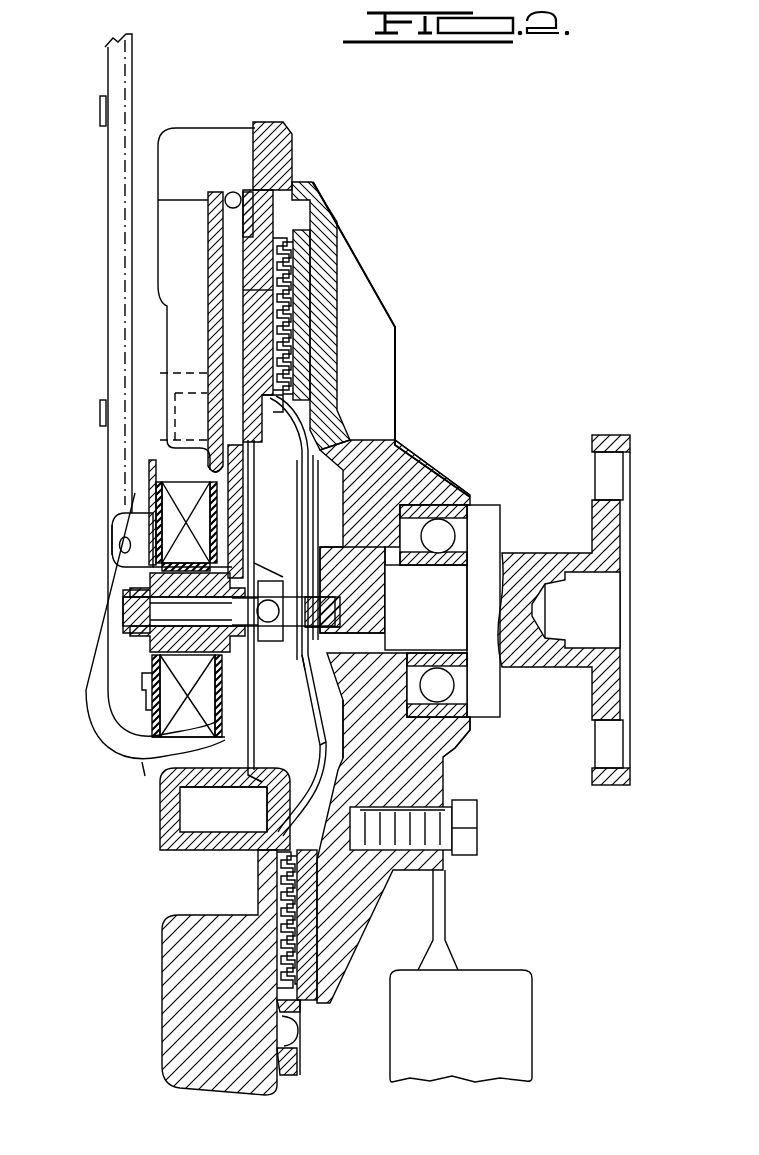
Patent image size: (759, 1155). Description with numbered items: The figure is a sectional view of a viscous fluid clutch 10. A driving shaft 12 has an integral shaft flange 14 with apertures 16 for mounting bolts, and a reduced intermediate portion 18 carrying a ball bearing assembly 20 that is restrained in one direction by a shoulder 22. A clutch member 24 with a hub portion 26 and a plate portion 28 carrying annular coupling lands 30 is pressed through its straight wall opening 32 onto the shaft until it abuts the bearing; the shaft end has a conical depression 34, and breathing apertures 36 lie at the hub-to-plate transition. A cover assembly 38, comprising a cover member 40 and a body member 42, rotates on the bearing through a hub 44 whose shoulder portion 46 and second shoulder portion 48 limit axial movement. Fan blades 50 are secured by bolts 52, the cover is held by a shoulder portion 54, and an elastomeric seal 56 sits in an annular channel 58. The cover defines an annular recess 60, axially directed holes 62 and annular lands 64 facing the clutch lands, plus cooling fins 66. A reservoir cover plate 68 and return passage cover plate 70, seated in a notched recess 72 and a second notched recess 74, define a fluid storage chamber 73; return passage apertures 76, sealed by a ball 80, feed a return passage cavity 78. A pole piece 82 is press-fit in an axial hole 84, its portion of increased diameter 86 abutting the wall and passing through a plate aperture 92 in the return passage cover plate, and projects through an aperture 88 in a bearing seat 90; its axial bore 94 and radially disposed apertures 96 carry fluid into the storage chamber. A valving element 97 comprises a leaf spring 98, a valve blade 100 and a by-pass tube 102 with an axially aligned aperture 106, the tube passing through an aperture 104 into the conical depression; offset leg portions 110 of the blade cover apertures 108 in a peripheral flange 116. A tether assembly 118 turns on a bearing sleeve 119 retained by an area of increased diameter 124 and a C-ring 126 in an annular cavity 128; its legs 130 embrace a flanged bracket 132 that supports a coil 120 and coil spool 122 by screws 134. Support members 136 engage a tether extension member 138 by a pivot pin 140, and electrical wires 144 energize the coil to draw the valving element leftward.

The viscous fluid clutch 10 is at (493, 268).
The driving shaft 12 is at (612, 548).
The shaft flange 14 is at (606, 437).
The apertures 16 is at (610, 496).
The reduced intermediate portion 18 is at (428, 600).
The ball bearing assembly 20 is at (466, 527).
The shoulder 22 is at (475, 675).
The clutch member 24 is at (300, 275).
The hub portion 26 is at (358, 660).
The plate portion 28 is at (290, 300).
The annular coupling lands 30 is at (292, 322).
The straight wall opening 32 is at (395, 536).
The conical depression 34 is at (350, 606).
The breathing apertures 36 is at (325, 750).
The cover assembly 38 is at (283, 124).
The cover member 40 is at (200, 126).
The body member 42 is at (378, 287).
The hub 44 is at (440, 486).
The shoulder portion 46 is at (470, 705).
The second shoulder portion 48 is at (425, 712).
The fan blades 50 is at (438, 1016).
The bolts 52 is at (466, 825).
The shoulder portion 54 is at (298, 1066).
The elastomeric seal 56 is at (302, 1013).
The annular channel 58 is at (300, 1040).
The annular recess 60 is at (305, 205).
The axially directed holes 62 is at (246, 225).
The annular lands 64 is at (270, 300).
The cooling fins 66 is at (165, 1012).
The reservoir cover plate 68 is at (322, 712).
The return passage cover plate 70 is at (255, 500).
The annular notched recess 72 is at (268, 830).
The fluid storage chamber 73 is at (266, 487).
The second notched recess 74 is at (262, 778).
The return passage apertures 76 is at (230, 270).
The return passage cavity 78 is at (215, 468).
The ball 80 is at (232, 192).
The pole piece 82 is at (128, 615).
The axial hole 84 is at (240, 601).
The portion of increased diameter 86 is at (215, 672).
The aperture 88 is at (160, 632).
The bearing seat 90 is at (132, 591).
The diaphragm bend 92 is at (268, 563).
The axial bore 94 is at (258, 640).
The radially disposed apertures 96 is at (300, 680).
The valving element 97 is at (294, 671).
The leaf spring 98 is at (308, 525).
The valve blade 100 is at (306, 514).
The by-pass tube 102 is at (332, 621).
The aperture 104 is at (332, 597).
The axially aligned aperture 106 is at (310, 540).
The apertures 108 is at (283, 402).
The offset leg portion 110 is at (270, 395).
The peripheral flange 116 is at (265, 815).
The tether assembly 118 is at (98, 534).
The bearing sleeve 119 is at (150, 565).
The coil 120 is at (172, 509).
The coil spool 122 is at (160, 722).
The area of increased diameter 124 is at (222, 555).
The C-ring 126 is at (136, 581).
The annular cavity 128 is at (149, 611).
The radially outwardly projecting legs 130 is at (150, 650).
The flanged bracket 132 is at (150, 470).
The screws 134 is at (150, 708).
The support members 136 is at (140, 520).
The tether extension member 138 is at (106, 258).
The pivot pin 140 is at (117, 544).
The electrical wires 144 is at (96, 688).